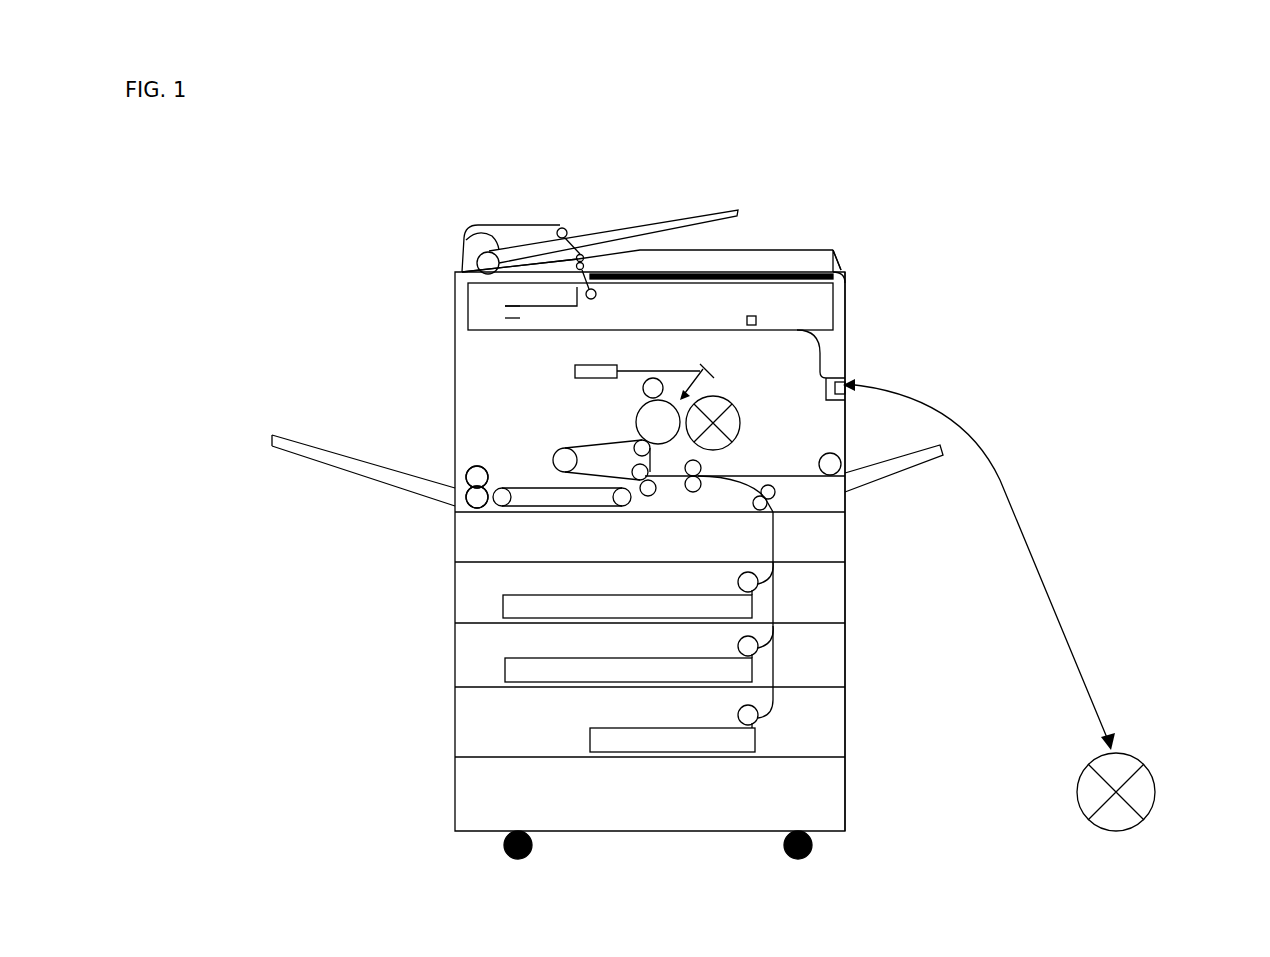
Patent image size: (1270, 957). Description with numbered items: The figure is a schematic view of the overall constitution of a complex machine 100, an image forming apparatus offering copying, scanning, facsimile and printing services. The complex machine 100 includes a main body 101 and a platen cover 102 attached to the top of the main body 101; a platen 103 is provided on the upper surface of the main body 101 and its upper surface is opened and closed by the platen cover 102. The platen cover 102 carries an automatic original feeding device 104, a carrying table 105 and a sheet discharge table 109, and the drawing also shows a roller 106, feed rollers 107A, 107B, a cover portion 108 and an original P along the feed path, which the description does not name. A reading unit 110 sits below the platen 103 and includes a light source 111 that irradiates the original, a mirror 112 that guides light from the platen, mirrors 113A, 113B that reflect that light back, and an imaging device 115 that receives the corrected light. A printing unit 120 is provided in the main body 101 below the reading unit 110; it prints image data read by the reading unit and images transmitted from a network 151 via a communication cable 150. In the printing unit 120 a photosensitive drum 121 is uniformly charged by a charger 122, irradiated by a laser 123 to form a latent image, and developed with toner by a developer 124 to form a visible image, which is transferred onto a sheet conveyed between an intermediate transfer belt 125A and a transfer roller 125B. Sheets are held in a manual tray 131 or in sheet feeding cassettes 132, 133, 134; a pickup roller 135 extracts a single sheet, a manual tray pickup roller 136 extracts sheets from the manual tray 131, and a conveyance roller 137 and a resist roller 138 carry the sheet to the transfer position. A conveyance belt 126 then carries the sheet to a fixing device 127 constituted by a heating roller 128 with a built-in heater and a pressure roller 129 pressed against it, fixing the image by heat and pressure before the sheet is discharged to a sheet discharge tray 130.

The complex machine 100 is at (798, 137).
The main body 101 is at (840, 316).
The platen cover 102 is at (793, 254).
The platen 103 is at (839, 268).
The automatic original feeding device 104 is at (508, 226).
The carrying table 105 is at (713, 210).
The pickup roller 106 is at (566, 228).
The feed roller 107A is at (480, 258).
The feed roller 107B is at (600, 256).
The document feeder cover 108 is at (484, 233).
The sheet discharge table 109 is at (718, 250).
The reading unit 110 is at (841, 274).
The light source 111 is at (597, 296).
The mirror 112 is at (580, 306).
The mirror 113A is at (503, 306).
The mirror 113B is at (503, 320).
The imaging device 115 is at (756, 320).
The printing unit 120 is at (835, 350).
The photosensitive drum 121 is at (640, 413).
The charger 122 is at (645, 390).
The laser 123 is at (577, 371).
The developer 124 is at (740, 411).
The intermediate transfer belt 125A is at (562, 449).
The transfer roller 125B is at (649, 496).
The conveyance belt 126 is at (520, 466).
The fixing device 127 is at (393, 470).
The heating roller 128 is at (466, 488).
The pressure roller 129 is at (468, 468).
The sheet discharge tray 130 is at (282, 440).
The manual tray 131 is at (893, 467).
The sheet feeding cassette 132 is at (503, 606).
The sheet feeding cassette 133 is at (505, 672).
The sheet feeding cassette 134 is at (590, 740).
The pickup roller 135 is at (738, 581).
The manual tray pickup roller 136 is at (836, 458).
The conveyance roller 137 is at (774, 496).
The resist roller 138 is at (696, 492).
The communication cable 150 is at (1040, 540).
The network 151 is at (1144, 765).
The document P is at (452, 273).